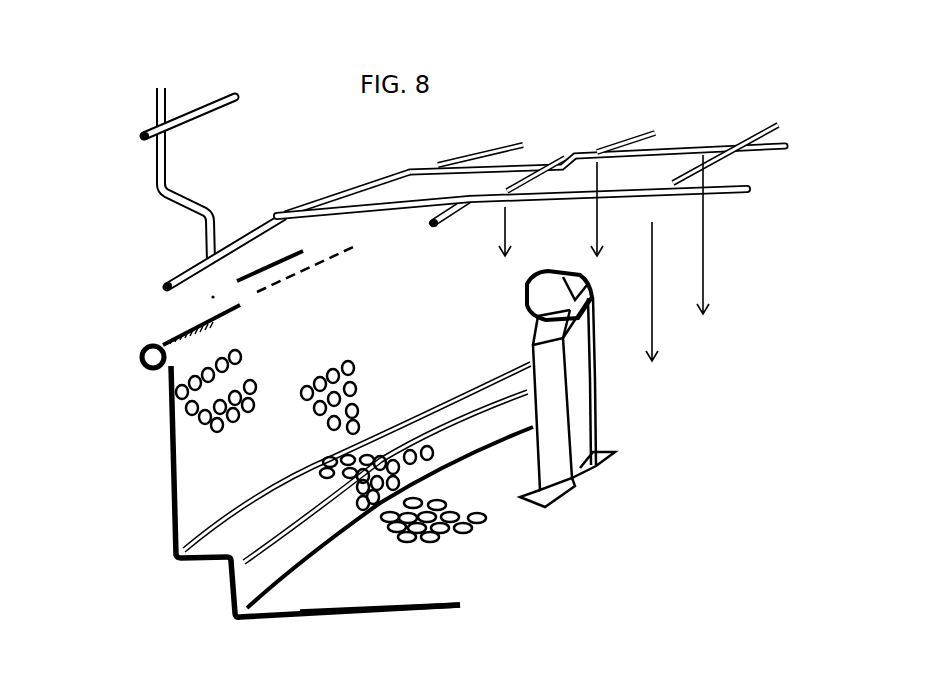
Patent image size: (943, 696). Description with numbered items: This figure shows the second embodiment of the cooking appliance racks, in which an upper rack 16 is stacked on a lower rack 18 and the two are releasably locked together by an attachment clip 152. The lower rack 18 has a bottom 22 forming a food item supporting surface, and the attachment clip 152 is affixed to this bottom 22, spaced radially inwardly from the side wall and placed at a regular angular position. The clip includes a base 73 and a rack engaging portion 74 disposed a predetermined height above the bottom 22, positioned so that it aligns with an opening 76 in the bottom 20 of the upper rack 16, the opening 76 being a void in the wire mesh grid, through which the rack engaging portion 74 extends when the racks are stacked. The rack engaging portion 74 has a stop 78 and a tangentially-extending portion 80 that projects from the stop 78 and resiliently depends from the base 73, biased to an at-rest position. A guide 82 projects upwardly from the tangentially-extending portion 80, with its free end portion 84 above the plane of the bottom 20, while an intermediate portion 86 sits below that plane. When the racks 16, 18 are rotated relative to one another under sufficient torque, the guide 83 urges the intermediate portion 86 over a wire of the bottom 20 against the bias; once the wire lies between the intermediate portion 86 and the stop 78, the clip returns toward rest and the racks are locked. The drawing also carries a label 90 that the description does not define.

The upper rack 16 is at (158, 150).
The lower rack 18 is at (172, 437).
The bottom of upper rack 20 is at (687, 135).
The bottom of lower rack 22 is at (432, 583).
The base 73 is at (597, 466).
The rack engaging portion 74 is at (590, 268).
The opening 76 is at (622, 176).
The stop 78 is at (593, 298).
The tangentially-extending portion 80 is at (604, 258).
The guide 82 is at (527, 284).
The guide 83 is at (496, 329).
The free end portion 84 is at (556, 271).
The intermediate portion 86 is at (535, 318).
The opening in hook 90 is at (578, 272).
The attachment clip 152 is at (598, 413).